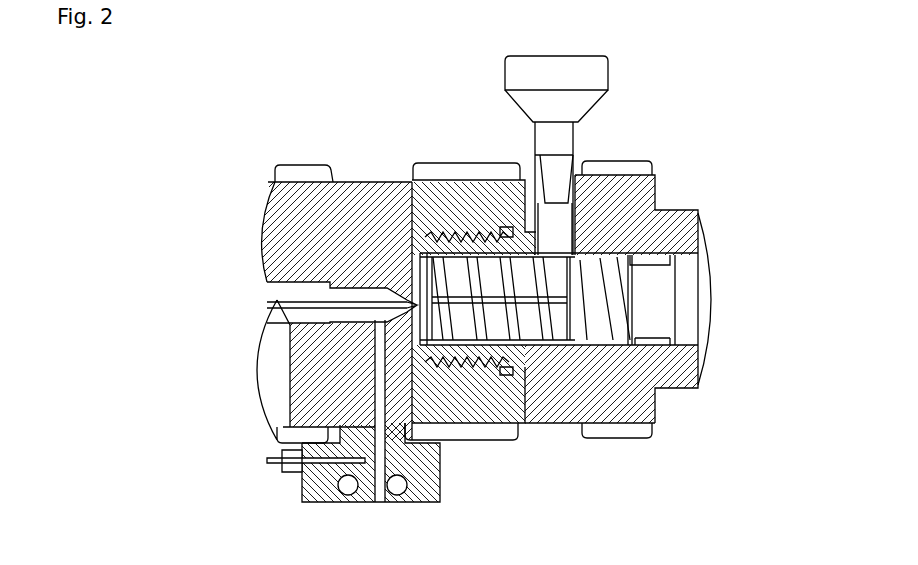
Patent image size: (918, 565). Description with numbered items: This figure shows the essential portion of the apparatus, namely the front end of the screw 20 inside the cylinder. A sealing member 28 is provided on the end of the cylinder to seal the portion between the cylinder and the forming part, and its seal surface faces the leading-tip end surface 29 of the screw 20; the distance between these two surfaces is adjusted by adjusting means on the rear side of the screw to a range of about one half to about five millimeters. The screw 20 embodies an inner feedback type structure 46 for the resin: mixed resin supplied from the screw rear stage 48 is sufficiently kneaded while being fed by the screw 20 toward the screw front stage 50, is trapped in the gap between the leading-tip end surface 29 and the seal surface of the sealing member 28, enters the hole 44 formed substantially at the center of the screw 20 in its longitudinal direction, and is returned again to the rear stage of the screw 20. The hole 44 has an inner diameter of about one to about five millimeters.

The screw 20 is at (618, 304).
The sealing member 28 is at (398, 181).
The leading-tip end surface 29 is at (456, 180).
The hole 44 is at (570, 424).
The inner feedback type structure 46 is at (535, 424).
The screw rear stage 48 is at (552, 250).
The screw front stage 50 is at (472, 441).